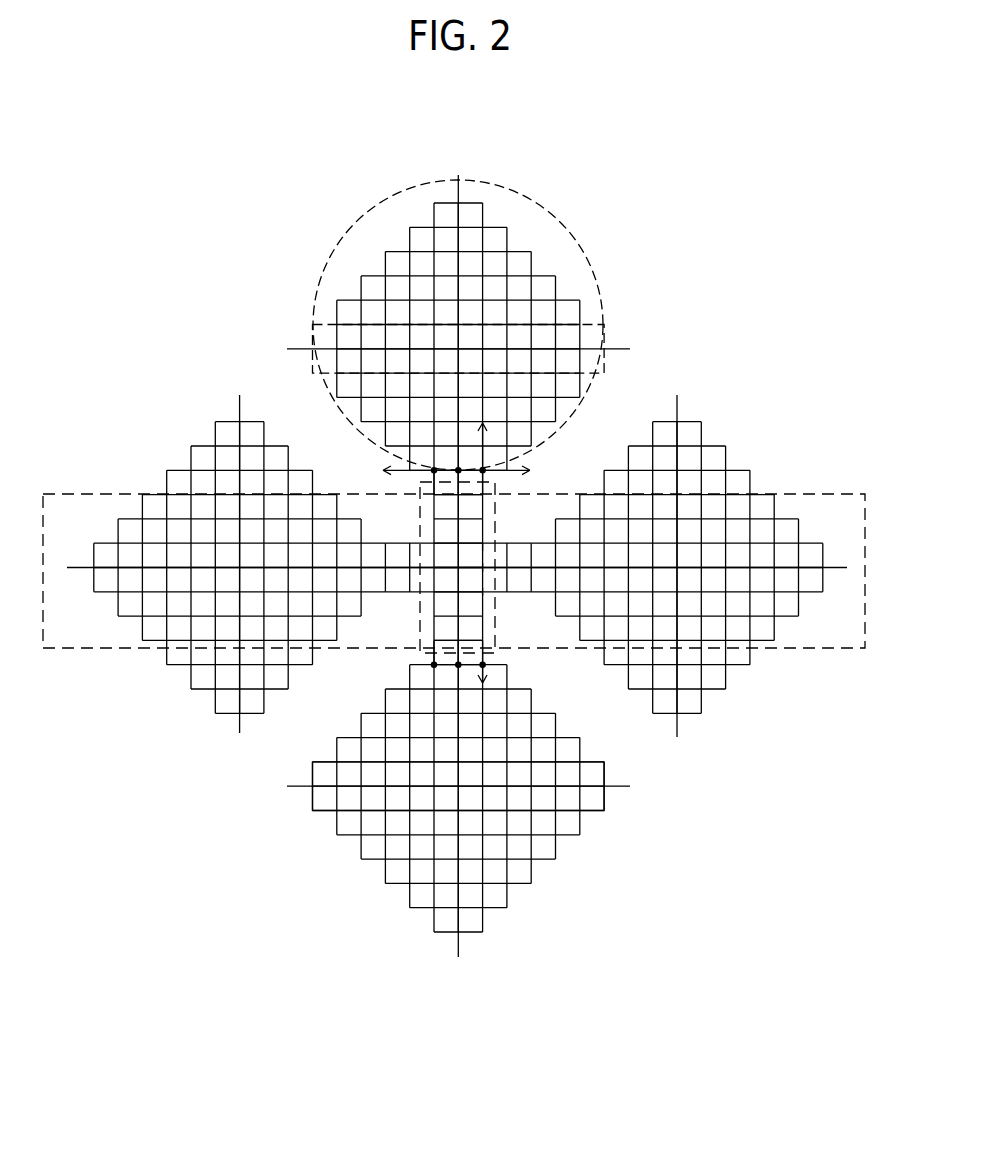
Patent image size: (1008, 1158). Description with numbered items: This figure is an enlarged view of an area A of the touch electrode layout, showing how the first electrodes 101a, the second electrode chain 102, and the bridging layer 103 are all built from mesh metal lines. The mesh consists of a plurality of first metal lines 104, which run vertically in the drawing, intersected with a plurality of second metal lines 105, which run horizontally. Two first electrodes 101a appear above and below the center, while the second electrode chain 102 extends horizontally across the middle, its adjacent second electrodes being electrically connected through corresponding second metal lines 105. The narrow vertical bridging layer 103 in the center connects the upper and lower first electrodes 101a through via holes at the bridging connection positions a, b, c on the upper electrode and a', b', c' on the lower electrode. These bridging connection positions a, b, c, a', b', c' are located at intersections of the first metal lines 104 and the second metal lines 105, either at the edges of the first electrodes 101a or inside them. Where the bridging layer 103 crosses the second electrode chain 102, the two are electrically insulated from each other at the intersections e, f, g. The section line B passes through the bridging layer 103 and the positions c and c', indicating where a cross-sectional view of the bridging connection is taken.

The first electrode 101a is at (547, 213).
The second electrode chain 102 is at (813, 493).
The bridging layer 103 is at (495, 508).
The first metal line 104 is at (557, 848).
The second metal line 105 is at (596, 811).
The bridging connection position a is at (316, 412).
The bridging connection position b is at (347, 390).
The bridging connection position c is at (372, 349).
The bridging connection position a' is at (310, 724).
The bridging connection position b' is at (341, 743).
The bridging connection position c' is at (373, 763).
The intersection e is at (483, 592).
The intersection f is at (483, 568).
The intersection g is at (483, 547).
The area A is at (453, 468).
The section line B- B is at (489, 556).